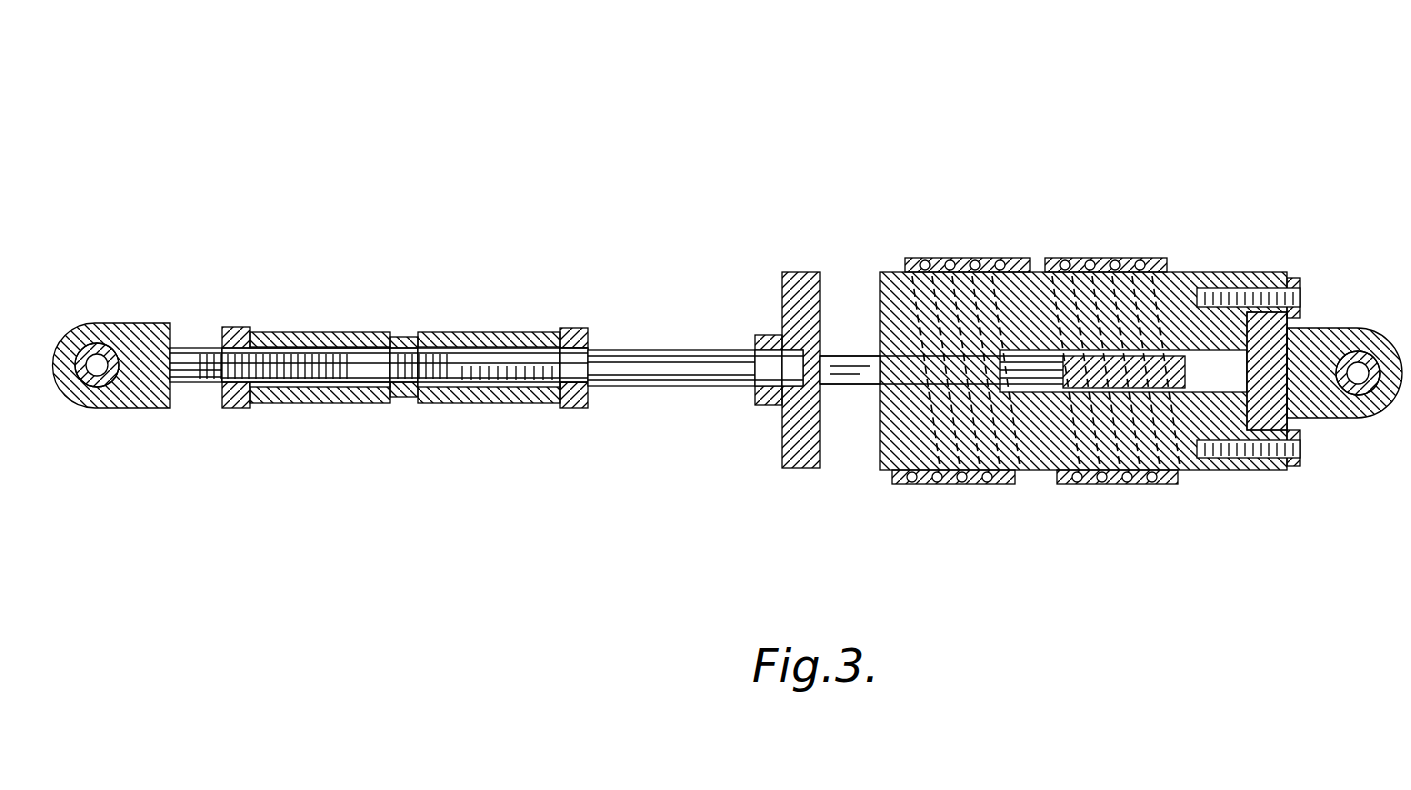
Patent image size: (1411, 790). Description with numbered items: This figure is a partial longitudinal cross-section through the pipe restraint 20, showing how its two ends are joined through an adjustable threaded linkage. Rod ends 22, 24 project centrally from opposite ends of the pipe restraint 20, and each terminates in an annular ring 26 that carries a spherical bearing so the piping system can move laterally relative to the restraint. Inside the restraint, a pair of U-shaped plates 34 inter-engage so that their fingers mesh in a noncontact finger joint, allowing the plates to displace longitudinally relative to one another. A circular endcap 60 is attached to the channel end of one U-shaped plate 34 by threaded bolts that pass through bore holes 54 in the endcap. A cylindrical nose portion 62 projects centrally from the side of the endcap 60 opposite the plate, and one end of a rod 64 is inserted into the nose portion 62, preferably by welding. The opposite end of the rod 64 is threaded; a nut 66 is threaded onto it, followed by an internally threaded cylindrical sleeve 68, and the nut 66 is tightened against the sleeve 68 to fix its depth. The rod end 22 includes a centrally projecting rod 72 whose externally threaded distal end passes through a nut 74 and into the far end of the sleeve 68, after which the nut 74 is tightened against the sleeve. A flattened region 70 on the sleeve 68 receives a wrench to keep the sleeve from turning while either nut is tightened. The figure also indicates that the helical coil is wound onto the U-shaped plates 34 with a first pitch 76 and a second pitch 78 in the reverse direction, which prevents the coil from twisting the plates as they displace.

The pipe restraint 20 is at (1324, 155).
The rod end 22 is at (164, 323).
The rod end 24 is at (1310, 328).
The annular ring 26 is at (1330, 420).
The U-shaped plates 34 is at (848, 388).
The bore holes 54 is at (1298, 280).
The circular endcap 60 is at (800, 272).
The cylindrical nose portion 62 is at (756, 336).
The rod 64 is at (668, 387).
The nut 66 is at (572, 328).
The cylindrical sleeve 68 is at (300, 332).
The flattened region 70 is at (408, 337).
The rod 72 is at (186, 384).
The nut 74 is at (236, 327).
The first pitch 76 is at (954, 232).
The second pitch 78 is at (1105, 229).